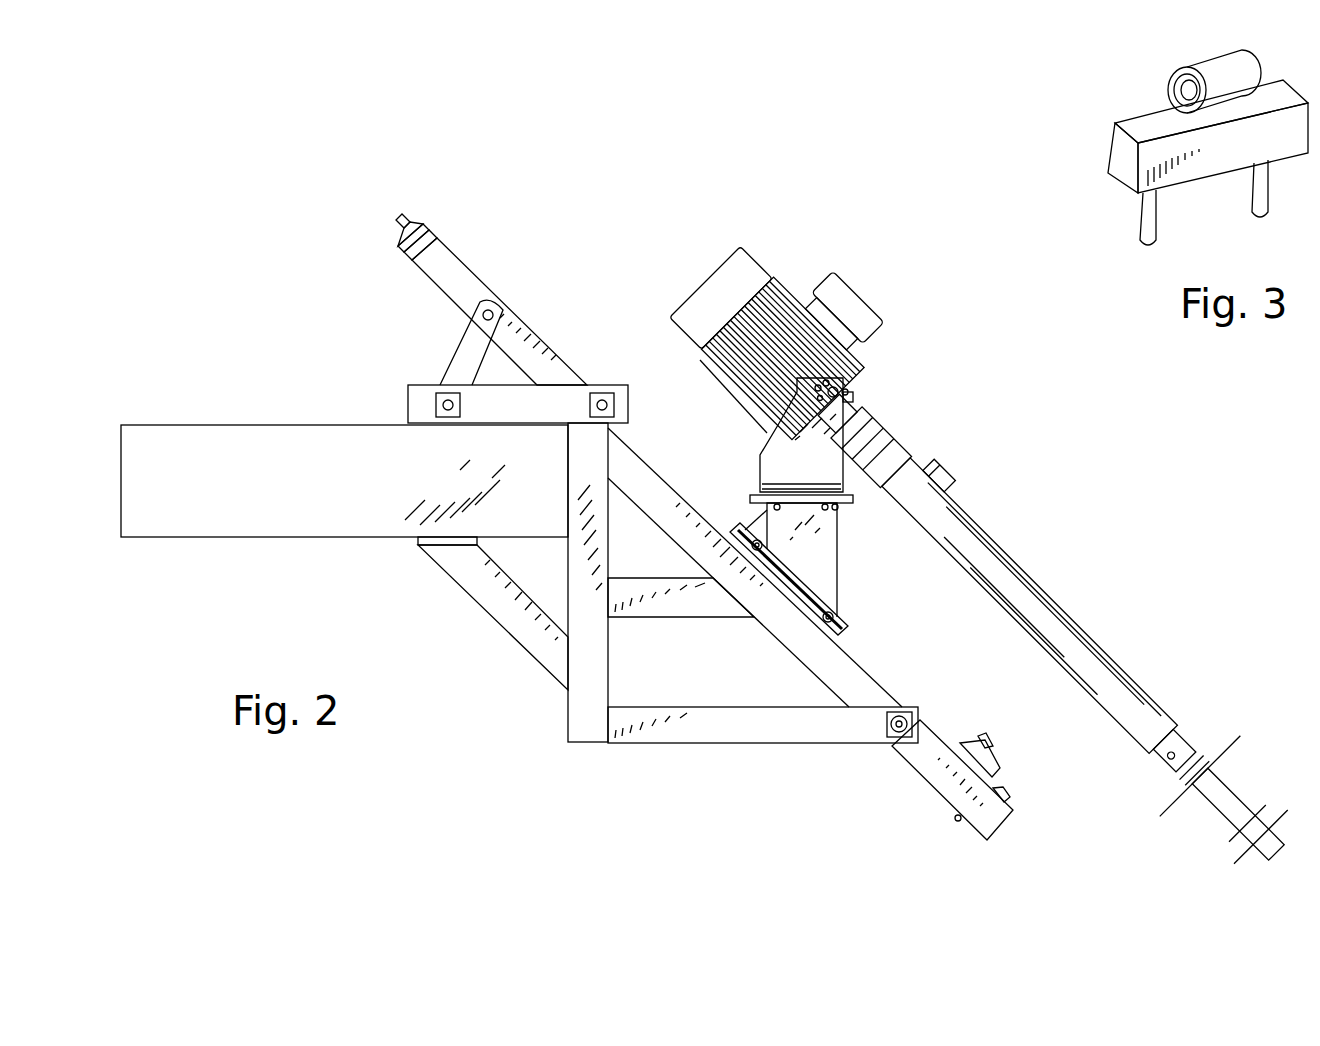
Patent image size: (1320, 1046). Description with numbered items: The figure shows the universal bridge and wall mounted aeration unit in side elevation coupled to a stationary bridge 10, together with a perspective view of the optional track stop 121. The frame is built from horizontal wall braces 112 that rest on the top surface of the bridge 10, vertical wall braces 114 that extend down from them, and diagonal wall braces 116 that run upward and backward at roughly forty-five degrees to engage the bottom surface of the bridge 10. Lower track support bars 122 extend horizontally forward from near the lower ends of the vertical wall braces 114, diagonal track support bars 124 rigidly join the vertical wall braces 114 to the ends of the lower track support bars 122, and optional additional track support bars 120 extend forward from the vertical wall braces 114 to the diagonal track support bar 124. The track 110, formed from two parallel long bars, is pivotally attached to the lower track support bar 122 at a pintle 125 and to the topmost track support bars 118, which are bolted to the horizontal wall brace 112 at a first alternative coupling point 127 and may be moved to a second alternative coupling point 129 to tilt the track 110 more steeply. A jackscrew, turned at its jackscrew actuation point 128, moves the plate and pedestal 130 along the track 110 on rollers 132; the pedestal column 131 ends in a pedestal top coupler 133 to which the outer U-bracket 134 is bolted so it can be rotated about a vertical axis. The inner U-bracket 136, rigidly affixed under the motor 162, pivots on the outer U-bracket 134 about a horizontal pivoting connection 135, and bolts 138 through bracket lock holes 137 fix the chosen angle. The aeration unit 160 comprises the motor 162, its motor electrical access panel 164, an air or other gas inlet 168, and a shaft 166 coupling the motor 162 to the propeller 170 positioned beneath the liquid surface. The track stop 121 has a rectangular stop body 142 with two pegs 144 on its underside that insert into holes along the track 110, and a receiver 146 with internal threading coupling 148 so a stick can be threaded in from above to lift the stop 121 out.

In FIG. 2, the bridge 10 is at (278, 486).
In FIG. 2, the track 110 is at (440, 270).
In FIG. 2, the horizontal wall braces 112 is at (532, 416).
In FIG. 2, the vertical wall braces 114 is at (595, 676).
In FIG. 2, the diagonal wall braces 116 is at (487, 597).
In FIG. 2, the additional track support bars 118 is at (462, 352).
In FIG. 2, the additional track support bars 120 is at (720, 611).
In FIG. 2, the track stop 121 is at (990, 750).
In FIG. 3, the track stop 121 is at (1149, 135).
In FIG. 2, the lower track support bars 122 is at (765, 736).
In FIG. 2, the diagonal track support bars 124 is at (807, 652).
In FIG. 2, the pintle 125 is at (892, 730).
In FIG. 2, the first alternative coupling point 127 is at (443, 405).
In FIG. 2, the jackscrew actuation point 128 is at (402, 218).
In FIG. 2, the second alternative coupling point 129 is at (603, 401).
In FIG. 2, the plate and pedestal 130 is at (833, 569).
In FIG. 2, the pedestal column 131 is at (832, 564).
In FIG. 2, the rollers 132 is at (842, 618).
In FIG. 2, the pedestal top coupler 133 is at (838, 506).
In FIG. 2, the outer U-bracket 134 is at (832, 479).
In FIG. 2, the pivoting connection 135 is at (853, 397).
In FIG. 2, the inner U-bracket 136 is at (870, 422).
In FIG. 2, the bracket lock holes 137 is at (765, 428).
In FIG. 2, the bolts 138 is at (838, 394).
In FIG. 3, the stop body 142 is at (1117, 152).
In FIG. 3, the pegs 144 is at (1142, 232).
In FIG. 3, the receiver 146 is at (1222, 68).
In FIG. 3, the coupling 148 is at (1154, 82).
In FIG. 2, the aeration unit 160 is at (1054, 605).
In FIG. 2, the motor 162 is at (820, 294).
In FIG. 2, the motor electrical access panel 164 is at (853, 295).
In FIG. 2, the shaft 166 is at (1015, 553).
In FIG. 2, the air or other gas inlet 168 is at (944, 455).
In FIG. 2, the propeller 170 is at (1215, 752).